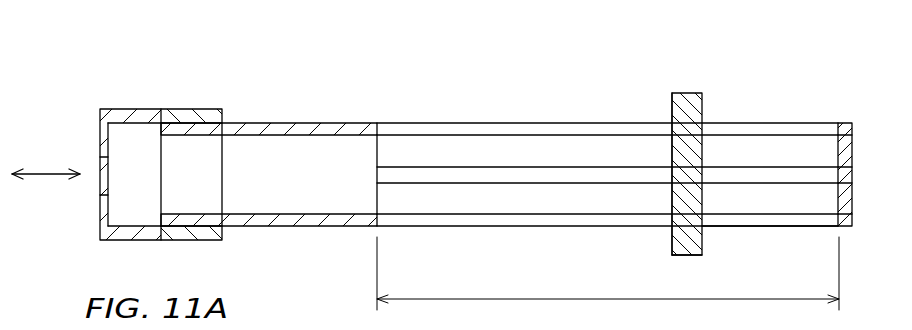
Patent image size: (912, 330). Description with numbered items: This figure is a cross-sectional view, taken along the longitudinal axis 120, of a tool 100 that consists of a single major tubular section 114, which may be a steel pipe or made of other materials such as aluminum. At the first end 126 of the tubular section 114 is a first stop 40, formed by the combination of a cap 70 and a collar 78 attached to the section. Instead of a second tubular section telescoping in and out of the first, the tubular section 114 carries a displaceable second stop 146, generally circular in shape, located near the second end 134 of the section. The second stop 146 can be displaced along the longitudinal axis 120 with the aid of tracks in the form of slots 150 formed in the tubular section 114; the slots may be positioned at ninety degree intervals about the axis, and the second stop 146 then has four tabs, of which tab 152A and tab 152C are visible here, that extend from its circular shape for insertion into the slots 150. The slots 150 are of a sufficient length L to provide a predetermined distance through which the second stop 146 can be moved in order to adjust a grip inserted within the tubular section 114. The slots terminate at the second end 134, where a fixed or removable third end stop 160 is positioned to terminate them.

The tool 100 is at (155, 47).
The first stop 40 is at (108, 100).
The cap 70 is at (132, 109).
The collar 78 is at (205, 109).
The first end 126 is at (178, 177).
The tubular section 114 is at (322, 123).
The slots 150 is at (583, 175).
The second stop 146 is at (672, 157).
The tab 152A is at (681, 93).
The tab 152C is at (690, 255).
The third end stop 160 is at (843, 125).
The second end 134 is at (828, 228).
The longitudinal axis 120 is at (45, 176).
The length of slots L is at (530, 300).